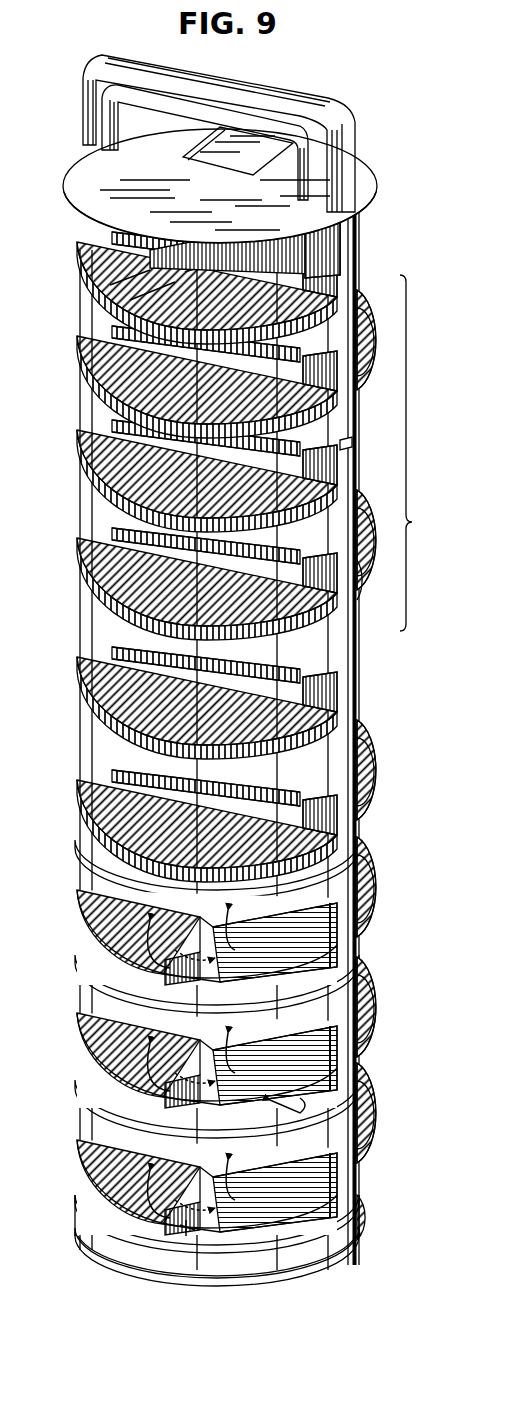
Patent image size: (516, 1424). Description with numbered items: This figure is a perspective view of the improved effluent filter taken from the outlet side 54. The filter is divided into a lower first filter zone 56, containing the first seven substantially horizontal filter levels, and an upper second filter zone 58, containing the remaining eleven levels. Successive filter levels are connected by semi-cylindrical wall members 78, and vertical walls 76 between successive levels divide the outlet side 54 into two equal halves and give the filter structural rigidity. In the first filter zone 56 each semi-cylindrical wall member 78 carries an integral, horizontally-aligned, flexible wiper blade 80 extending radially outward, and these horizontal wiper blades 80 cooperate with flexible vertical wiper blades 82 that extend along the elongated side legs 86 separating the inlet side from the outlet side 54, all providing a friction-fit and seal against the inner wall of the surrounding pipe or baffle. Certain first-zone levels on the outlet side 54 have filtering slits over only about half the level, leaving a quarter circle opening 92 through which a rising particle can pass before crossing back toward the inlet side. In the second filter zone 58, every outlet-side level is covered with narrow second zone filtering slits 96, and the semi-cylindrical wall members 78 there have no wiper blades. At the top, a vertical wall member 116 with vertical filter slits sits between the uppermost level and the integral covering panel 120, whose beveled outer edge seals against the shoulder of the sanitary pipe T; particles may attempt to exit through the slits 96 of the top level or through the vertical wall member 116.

The integral covering panel 120 is at (100, 183).
The vertical wall member 116 is at (330, 275).
The outlet side 54 is at (76, 288).
The elongated side leg 86 is at (345, 445).
The second filter zone 58 is at (387, 735).
The vertical integral wiper blade 82 is at (357, 560).
The second zone filtering slits 96 is at (100, 798).
The quarter circle opening 92 is at (330, 945).
The first filter zone 56 is at (95, 1048).
The semi-cylindrical wall member 78 is at (145, 1257).
The vertical wall 76 is at (222, 1222).
The wiper blade 80 is at (280, 1255).